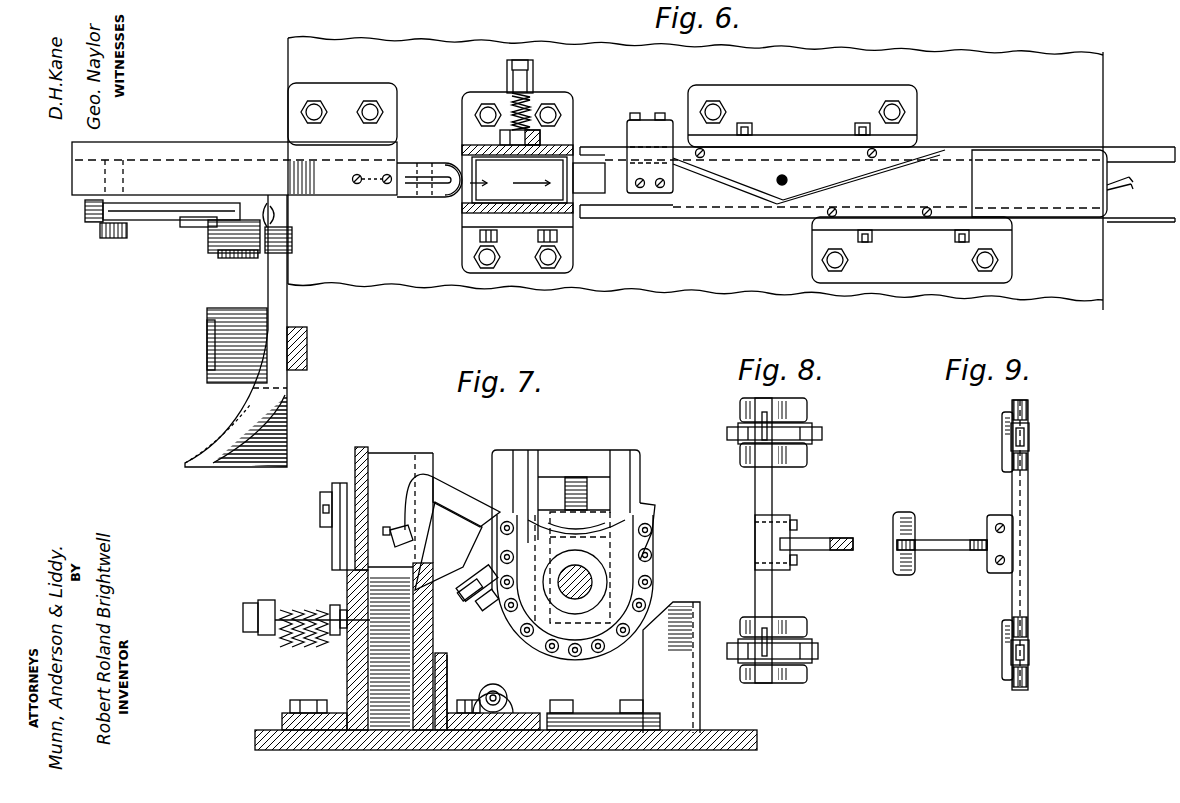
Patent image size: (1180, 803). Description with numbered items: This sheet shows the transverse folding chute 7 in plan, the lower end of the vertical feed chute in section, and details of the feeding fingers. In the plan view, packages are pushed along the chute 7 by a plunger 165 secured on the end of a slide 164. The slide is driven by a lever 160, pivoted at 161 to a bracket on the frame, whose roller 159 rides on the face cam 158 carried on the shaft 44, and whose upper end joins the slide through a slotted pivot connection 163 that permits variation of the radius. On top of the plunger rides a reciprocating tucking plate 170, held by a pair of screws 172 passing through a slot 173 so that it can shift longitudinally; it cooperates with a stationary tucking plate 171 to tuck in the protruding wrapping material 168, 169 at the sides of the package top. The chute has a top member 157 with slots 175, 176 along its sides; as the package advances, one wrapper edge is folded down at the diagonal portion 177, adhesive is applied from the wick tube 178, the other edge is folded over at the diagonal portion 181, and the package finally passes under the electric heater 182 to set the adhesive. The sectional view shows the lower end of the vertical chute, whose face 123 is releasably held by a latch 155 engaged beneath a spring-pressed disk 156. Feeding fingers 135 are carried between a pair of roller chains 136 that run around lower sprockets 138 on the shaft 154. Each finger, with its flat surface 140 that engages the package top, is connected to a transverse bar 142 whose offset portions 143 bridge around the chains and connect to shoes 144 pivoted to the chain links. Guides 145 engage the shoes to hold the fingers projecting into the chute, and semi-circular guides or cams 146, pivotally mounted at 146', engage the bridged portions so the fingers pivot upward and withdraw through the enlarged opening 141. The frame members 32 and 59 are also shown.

In FIG. 6, the folding chute 7 is at (723, 218).
In FIG. 6, the frame member 32 is at (468, 222).
In FIG. 7, the frame member 32 is at (378, 689).
In FIG. 6, the shaft 44 is at (307, 358).
In FIG. 6, the base frame 59 is at (523, 212).
In FIG. 7, the base frame 59 is at (380, 742).
In FIG. 7, the face 123 is at (355, 466).
In FIG. 7, the feeding plunger 135 is at (453, 490).
In FIG. 8, the feeding plunger 135 is at (824, 538).
In FIG. 9, the feeding plunger 135 is at (940, 540).
In FIG. 7, the roller chain 136 is at (651, 555).
In FIG. 8, the roller chain 136 is at (823, 438).
In FIG. 9, the roller chain 136 is at (1030, 438).
In FIG. 7, the sprocket 138 is at (628, 517).
In FIG. 7, the flat surface 140 is at (408, 527).
In FIG. 9, the flat surface 140 is at (903, 512).
In FIG. 7, the enlarged opening 141 is at (425, 562).
In FIG. 7, the transverse bar 142 is at (458, 596).
In FIG. 8, the transverse bar 142 is at (758, 487).
In FIG. 9, the transverse bar 142 is at (1030, 495).
In FIG. 8, the offset portion 143 is at (758, 455).
In FIG. 9, the offset portion 143 is at (1001, 441).
In FIG. 7, the shoe 144 is at (522, 560).
In FIG. 8, the shoe 144 is at (800, 410).
In FIG. 9, the shoe 144 is at (1030, 410).
In FIG. 7, the guide 145 is at (498, 454).
In FIG. 7, the semi-circular guide 146 is at (643, 667).
In FIG. 7, the pivot 146' is at (487, 714).
In FIG. 7, the shaft 154 is at (592, 584).
In FIG. 6, the latch 155 is at (538, 140).
In FIG. 7, the latch 155 is at (336, 556).
In FIG. 6, the spring-pressed disk 156 is at (509, 93).
In FIG. 7, the spring-pressed disk 156 is at (306, 608).
In FIG. 6, the top member 157 is at (813, 163).
In FIG. 6, the cam 158 is at (289, 430).
In FIG. 6, the follower roller 159 is at (233, 254).
In FIG. 6, the lever 160 is at (172, 220).
In FIG. 6, the pivot 161 is at (200, 228).
In FIG. 6, the slotted pivot connection 163 is at (113, 238).
In FIG. 6, the slide 164 is at (72, 175).
In FIG. 6, the plunger 165 is at (428, 190).
In FIG. 6, the protruding wrapping material 168 is at (518, 180).
In FIG. 6, the protruding wrapping material 169 is at (537, 175).
In FIG. 7, the protruding wrapping material 169 is at (390, 540).
In FIG. 6, the reciprocating tucking plate 170 is at (450, 166).
In FIG. 6, the stationary tucking plate 171 is at (582, 163).
In FIG. 6, the screws 172 is at (387, 174).
In FIG. 6, the slot 173 is at (406, 172).
In FIG. 6, the slot 175 is at (628, 162).
In FIG. 6, the slot 176 is at (648, 208).
In FIG. 6, the diagonal portion 177 is at (716, 184).
In FIG. 6, the tube 178 is at (792, 168).
In FIG. 6, the diagonal portion 181 is at (866, 180).
In FIG. 6, the electric heater 182 is at (1022, 170).